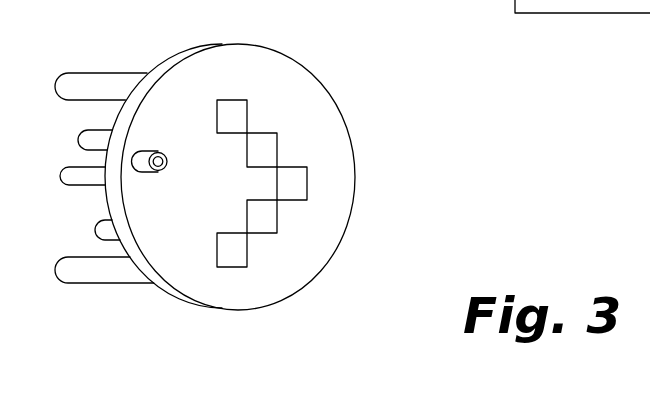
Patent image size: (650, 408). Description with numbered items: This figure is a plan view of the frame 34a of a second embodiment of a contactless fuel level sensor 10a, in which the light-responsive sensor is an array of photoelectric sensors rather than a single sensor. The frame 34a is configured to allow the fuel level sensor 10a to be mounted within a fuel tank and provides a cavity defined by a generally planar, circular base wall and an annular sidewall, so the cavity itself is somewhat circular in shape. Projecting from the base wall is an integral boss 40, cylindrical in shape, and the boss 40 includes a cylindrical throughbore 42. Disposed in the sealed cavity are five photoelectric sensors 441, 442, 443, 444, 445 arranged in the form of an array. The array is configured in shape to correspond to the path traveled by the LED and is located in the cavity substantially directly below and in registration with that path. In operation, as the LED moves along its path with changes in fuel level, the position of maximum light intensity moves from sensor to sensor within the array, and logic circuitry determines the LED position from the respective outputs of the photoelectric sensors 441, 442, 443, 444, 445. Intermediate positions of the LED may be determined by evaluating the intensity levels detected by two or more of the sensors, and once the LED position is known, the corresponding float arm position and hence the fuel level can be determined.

The fuel level sensor 10a is at (378, 134).
The frame 34a is at (177, 301).
The boss 40 is at (136, 166).
The cylindrical throughbore 42 is at (162, 156).
The photoelectric sensor 441 is at (237, 106).
The photoelectric sensor 442 is at (268, 143).
The photoelectric sensor 443 is at (298, 181).
The photoelectric sensor 444 is at (262, 226).
The photoelectric sensor 445 is at (238, 259).